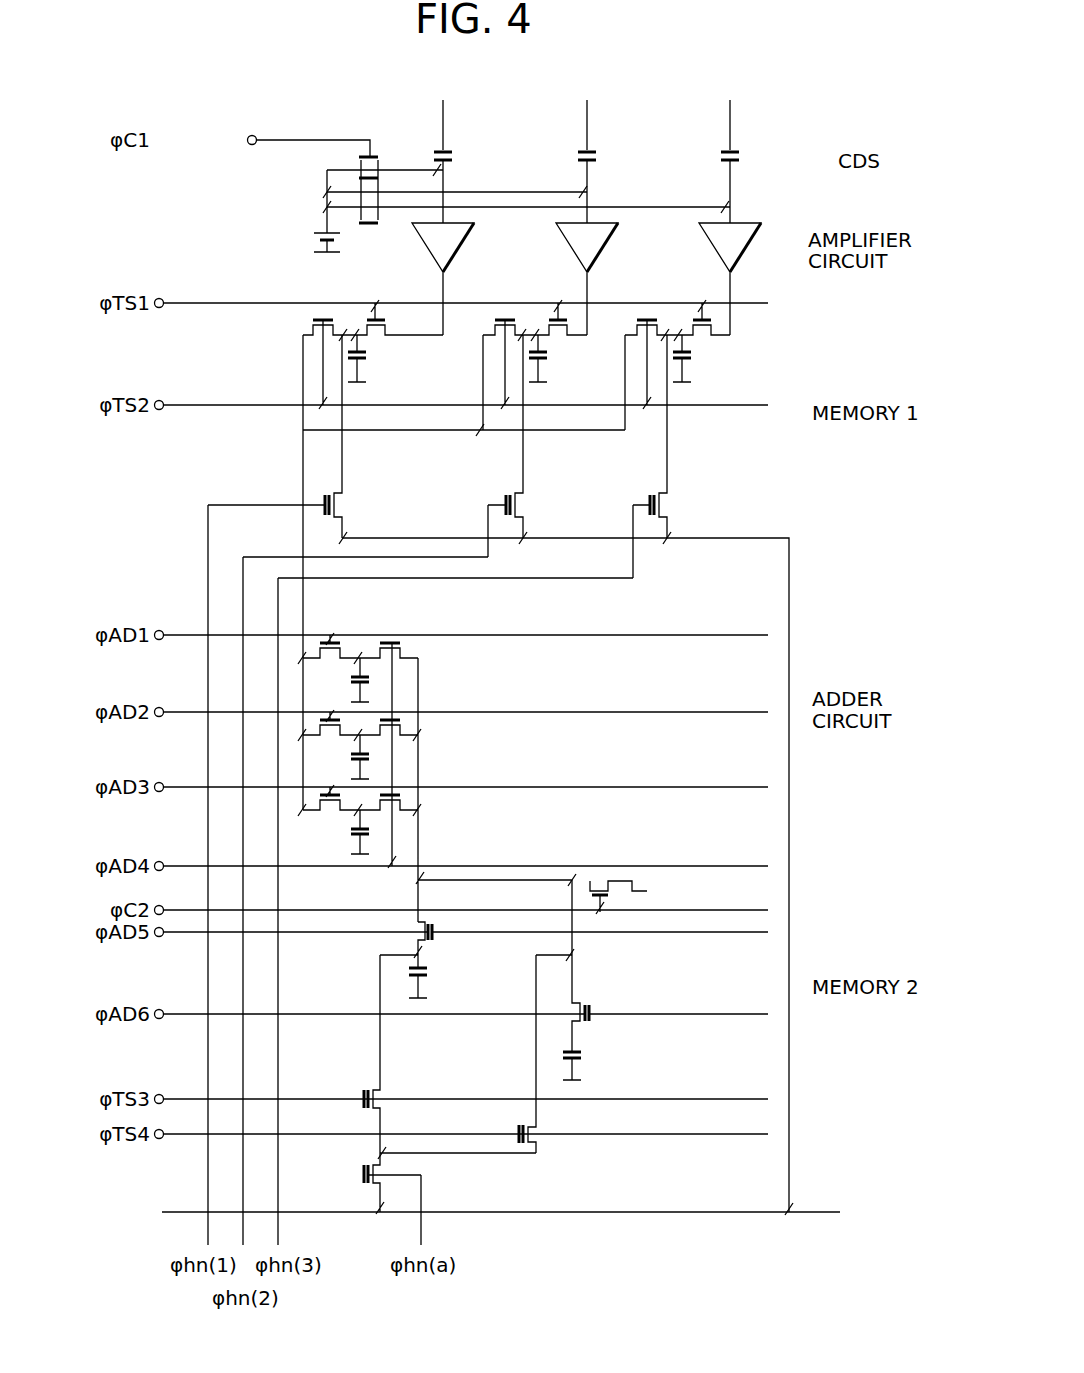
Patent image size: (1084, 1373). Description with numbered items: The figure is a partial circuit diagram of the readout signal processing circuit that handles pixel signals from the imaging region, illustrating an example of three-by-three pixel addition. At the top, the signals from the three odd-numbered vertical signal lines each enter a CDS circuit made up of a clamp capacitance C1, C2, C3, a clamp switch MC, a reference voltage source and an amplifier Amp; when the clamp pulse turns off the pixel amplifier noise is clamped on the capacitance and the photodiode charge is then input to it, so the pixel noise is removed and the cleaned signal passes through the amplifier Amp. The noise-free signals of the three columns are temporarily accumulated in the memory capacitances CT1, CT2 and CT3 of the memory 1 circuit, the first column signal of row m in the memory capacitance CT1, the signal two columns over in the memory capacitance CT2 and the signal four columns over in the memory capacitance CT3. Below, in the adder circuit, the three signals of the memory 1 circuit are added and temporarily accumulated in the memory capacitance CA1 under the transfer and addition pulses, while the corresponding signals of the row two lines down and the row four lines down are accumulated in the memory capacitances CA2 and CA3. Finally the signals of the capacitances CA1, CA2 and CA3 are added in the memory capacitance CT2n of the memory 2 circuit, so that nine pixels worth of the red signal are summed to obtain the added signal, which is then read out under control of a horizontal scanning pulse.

The memory 1 is at (514, 203).
The memory 2 is at (370, 173).
The clamp switch MC is at (331, 197).
The capacitance C1 is at (458, 159).
The capacitance C2 is at (602, 159).
The capacitance C3 is at (745, 159).
The amplifier Amp is at (586, 279).
The memory capacitance CT1 is at (325, 555).
The memory capacitance CT2 is at (546, 428).
The memory capacitance CT3 is at (688, 439).
The memory capacitance CA1 is at (503, 667).
The memory capacitance CA2 is at (542, 744).
The memory capacitance CA3 is at (542, 819).
The memory capacitance CT2n is at (450, 1044).